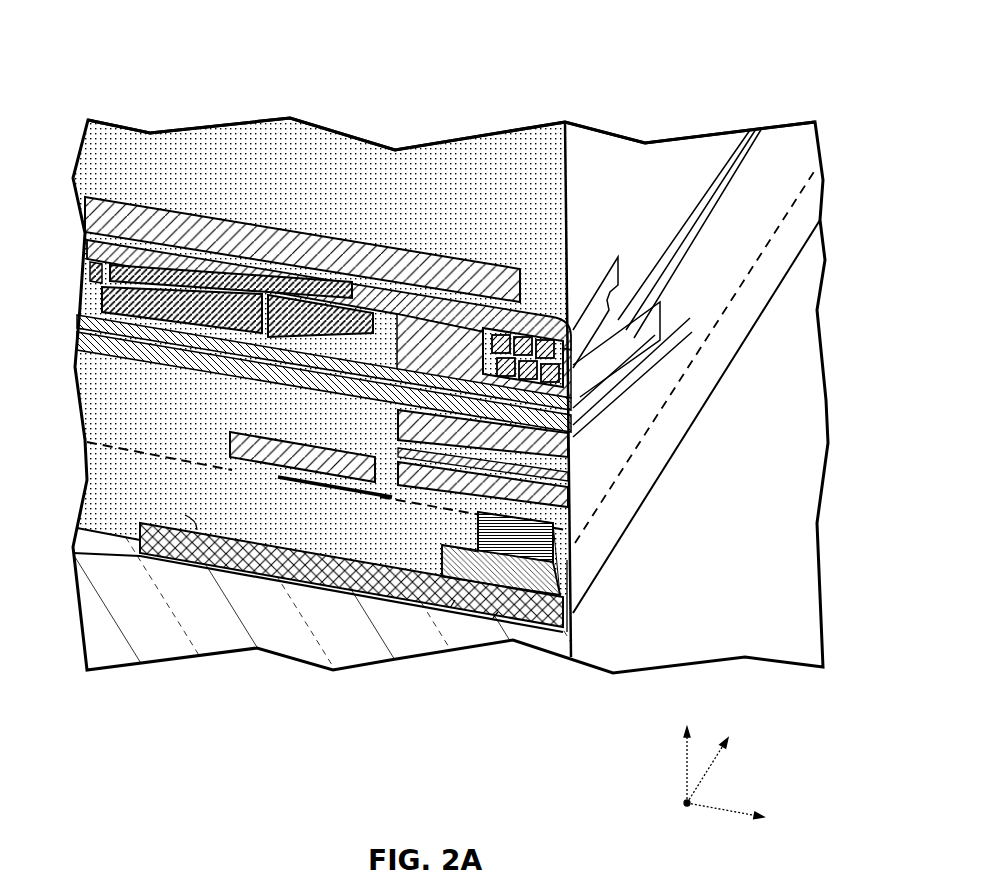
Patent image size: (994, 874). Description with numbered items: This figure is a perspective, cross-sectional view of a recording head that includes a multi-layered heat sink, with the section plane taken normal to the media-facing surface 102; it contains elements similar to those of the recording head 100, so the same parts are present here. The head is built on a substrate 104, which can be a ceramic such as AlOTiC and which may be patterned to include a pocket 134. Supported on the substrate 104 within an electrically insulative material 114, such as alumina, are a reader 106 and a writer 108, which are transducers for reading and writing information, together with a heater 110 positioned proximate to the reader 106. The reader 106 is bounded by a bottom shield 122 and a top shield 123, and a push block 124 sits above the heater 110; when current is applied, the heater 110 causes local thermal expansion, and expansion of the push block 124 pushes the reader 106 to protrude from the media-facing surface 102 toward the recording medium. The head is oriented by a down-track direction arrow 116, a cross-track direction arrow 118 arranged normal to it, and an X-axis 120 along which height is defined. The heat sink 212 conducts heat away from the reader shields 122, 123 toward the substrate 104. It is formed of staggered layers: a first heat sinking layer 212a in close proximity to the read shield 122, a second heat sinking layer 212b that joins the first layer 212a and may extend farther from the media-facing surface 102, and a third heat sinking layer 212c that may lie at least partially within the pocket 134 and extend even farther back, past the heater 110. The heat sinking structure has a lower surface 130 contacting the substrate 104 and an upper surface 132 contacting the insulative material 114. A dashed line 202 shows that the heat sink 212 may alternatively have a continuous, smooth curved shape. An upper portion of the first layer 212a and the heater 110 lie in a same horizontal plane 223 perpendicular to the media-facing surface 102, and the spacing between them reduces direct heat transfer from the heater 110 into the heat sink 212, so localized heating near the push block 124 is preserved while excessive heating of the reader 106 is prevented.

The recording head 100 is at (770, 55).
The media-facing surface 102 is at (748, 578).
The substrate 104 is at (133, 623).
The reader 106 is at (595, 500).
The writer 108 is at (628, 320).
The heater 110 is at (357, 505).
The electrically insulative material 114 is at (103, 382).
The down-track direction arrow 116 is at (687, 778).
The cross-track direction arrow 118 is at (716, 750).
The X-axis 120 is at (722, 810).
The bottom shield 122 is at (575, 534).
The top shield 123 is at (575, 481).
The push block 124 is at (248, 452).
The lower surface 130 is at (450, 608).
The upper surface 132 is at (185, 515).
The pocket 134 is at (493, 618).
The dashed line 202 is at (480, 510).
The heat sink 212 is at (605, 562).
The first heat sinking layer 212a is at (575, 540).
The second heat sinking layer 212b is at (558, 568).
The third heat sinking layer 212c is at (540, 620).
The horizontal plane 223 is at (761, 262).